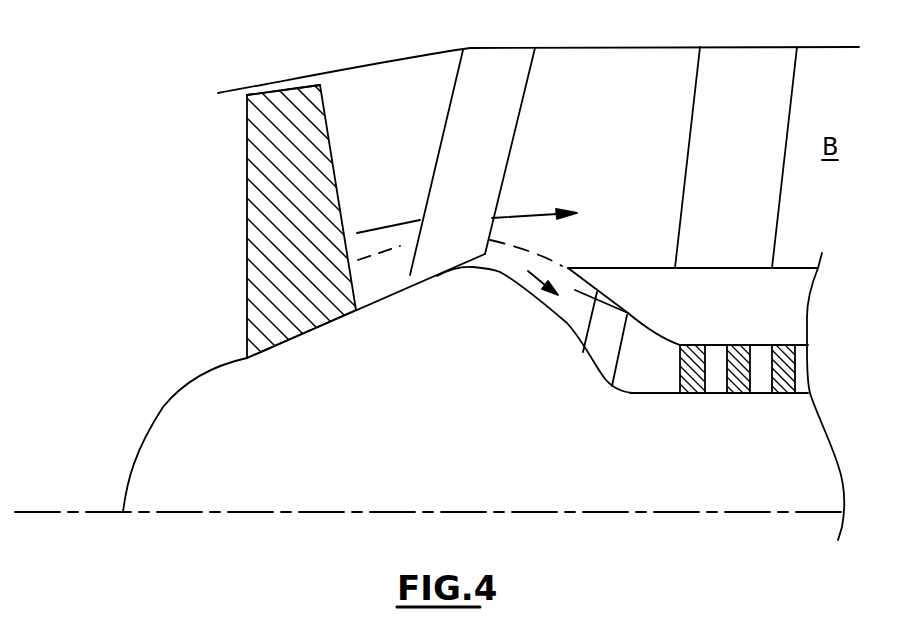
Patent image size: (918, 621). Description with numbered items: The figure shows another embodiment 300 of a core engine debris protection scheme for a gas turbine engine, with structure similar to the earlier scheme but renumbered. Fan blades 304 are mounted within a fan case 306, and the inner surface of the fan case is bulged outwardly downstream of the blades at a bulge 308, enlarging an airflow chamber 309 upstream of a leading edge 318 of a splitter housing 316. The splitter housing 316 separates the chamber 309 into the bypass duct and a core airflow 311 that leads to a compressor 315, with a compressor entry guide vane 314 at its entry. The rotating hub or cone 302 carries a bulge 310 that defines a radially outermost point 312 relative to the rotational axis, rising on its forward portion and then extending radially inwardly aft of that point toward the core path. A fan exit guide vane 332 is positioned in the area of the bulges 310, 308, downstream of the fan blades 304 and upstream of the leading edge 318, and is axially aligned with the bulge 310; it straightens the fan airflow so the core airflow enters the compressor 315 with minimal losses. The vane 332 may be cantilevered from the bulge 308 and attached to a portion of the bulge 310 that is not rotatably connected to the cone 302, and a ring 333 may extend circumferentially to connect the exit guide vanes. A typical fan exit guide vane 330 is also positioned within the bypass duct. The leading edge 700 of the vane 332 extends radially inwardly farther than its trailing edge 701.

The embodiment 300 is at (84, 381).
The rotating hub or cone 302 is at (158, 463).
The fan blades 304 is at (267, 222).
The fan case 306 is at (278, 88).
The bulge 308 is at (437, 53).
The airflow chamber 309 is at (615, 160).
The bulge 310 is at (492, 288).
The core airflow 311 is at (647, 370).
The radially outermost point 312 is at (472, 272).
The compressor entry guide vane 314 is at (607, 355).
The compressor 315 is at (680, 383).
The splitter housing 316 is at (760, 318).
The leading edge 318 is at (570, 268).
The fan exit guide vane 330 is at (744, 70).
The fan exit guide vane 332 is at (492, 65).
The ring 333 is at (457, 259).
The leading edge 700 is at (410, 275).
The trailing edge 701 is at (485, 255).